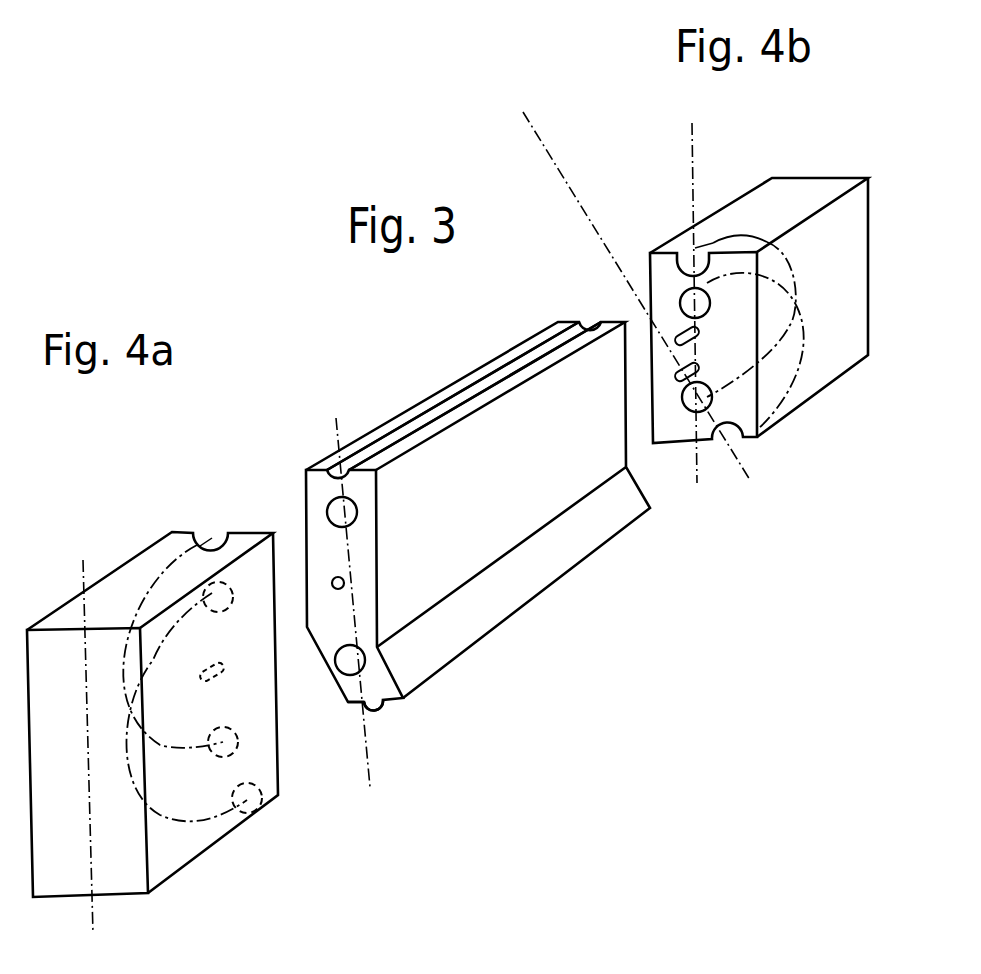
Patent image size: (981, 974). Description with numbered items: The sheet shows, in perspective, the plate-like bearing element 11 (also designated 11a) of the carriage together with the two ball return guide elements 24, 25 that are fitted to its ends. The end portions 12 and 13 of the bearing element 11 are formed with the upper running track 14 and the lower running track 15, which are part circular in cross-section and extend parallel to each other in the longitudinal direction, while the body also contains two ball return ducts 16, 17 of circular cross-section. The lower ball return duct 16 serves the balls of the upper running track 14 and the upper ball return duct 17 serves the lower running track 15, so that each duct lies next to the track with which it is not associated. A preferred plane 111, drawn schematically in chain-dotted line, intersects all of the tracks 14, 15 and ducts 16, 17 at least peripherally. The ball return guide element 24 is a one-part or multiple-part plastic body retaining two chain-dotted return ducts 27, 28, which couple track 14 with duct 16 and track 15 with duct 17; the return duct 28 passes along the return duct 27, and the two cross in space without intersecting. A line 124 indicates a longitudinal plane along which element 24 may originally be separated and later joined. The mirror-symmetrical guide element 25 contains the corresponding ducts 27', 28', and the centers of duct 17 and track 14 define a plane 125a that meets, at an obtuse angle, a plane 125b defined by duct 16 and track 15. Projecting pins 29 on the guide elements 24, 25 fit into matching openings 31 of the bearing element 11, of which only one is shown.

In FIG. 3, the bearing element 11 is at (541, 511).
In FIG. 3, the bearing element 11a is at (580, 397).
In FIG. 3, the end portion 12 is at (418, 403).
In FIG. 3, the end portion 13 is at (360, 703).
In FIG. 3, the upper running track 14 is at (500, 392).
In FIG. 3, the lower running track 15 is at (378, 703).
In FIG. 3, the lower ball return duct 16 is at (362, 655).
In FIG. 3, the upper ball return duct 17 is at (357, 509).
In FIG. 3, the opening 31 is at (332, 582).
In FIG. 3, the plane 111 is at (340, 428).
In FIG. 4A, the ball return guide element 24 is at (140, 510).
In FIG. 4A, the line 124 is at (82, 563).
In FIG. 4A, the return duct 27 is at (137, 643).
In FIG. 4A, the return duct 28 is at (161, 709).
In FIG. 4A, the pin 29 is at (224, 674).
In FIG. 4B, the pin 29 is at (676, 336).
In FIG. 4B, the ball return guide element 25 is at (718, 168).
In FIG. 4B, the plane 125a is at (689, 147).
In FIG. 4B, the plane 125b is at (548, 108).
In FIG. 4B, the return duct 27' is at (776, 307).
In FIG. 4B, the return duct 28' is at (783, 351).